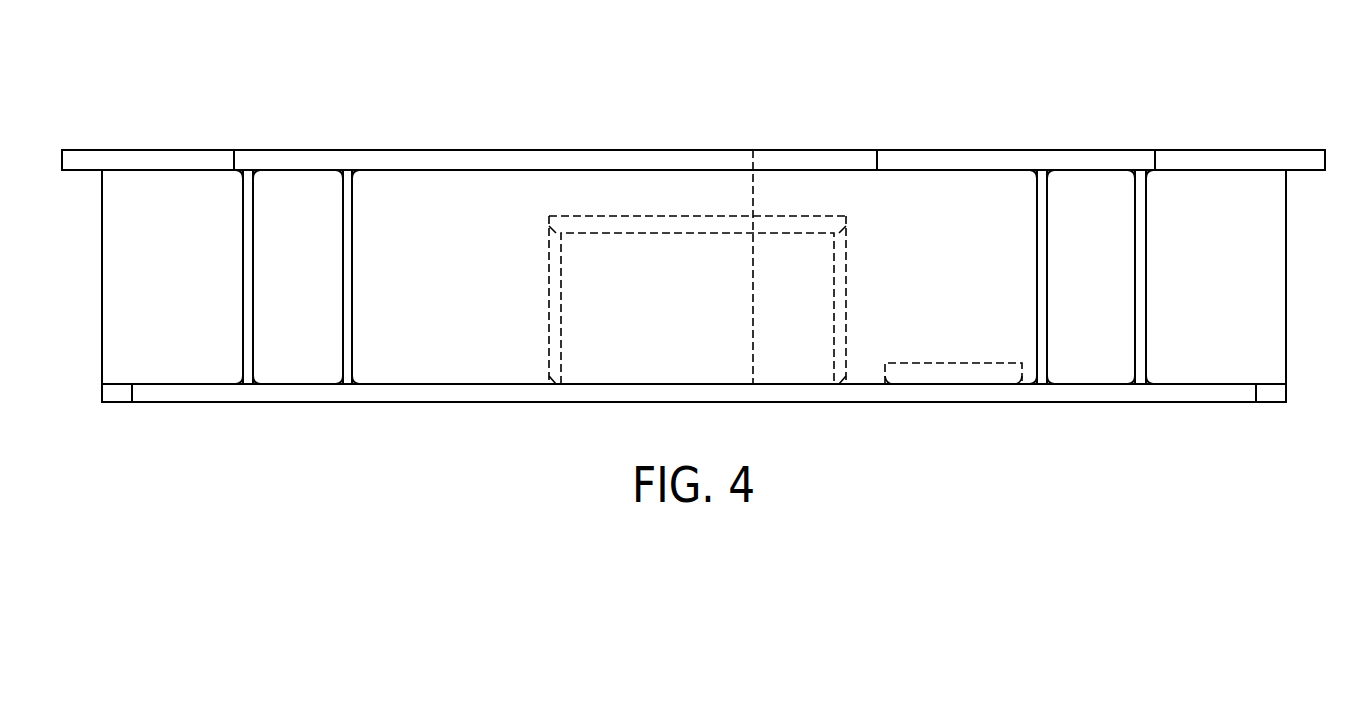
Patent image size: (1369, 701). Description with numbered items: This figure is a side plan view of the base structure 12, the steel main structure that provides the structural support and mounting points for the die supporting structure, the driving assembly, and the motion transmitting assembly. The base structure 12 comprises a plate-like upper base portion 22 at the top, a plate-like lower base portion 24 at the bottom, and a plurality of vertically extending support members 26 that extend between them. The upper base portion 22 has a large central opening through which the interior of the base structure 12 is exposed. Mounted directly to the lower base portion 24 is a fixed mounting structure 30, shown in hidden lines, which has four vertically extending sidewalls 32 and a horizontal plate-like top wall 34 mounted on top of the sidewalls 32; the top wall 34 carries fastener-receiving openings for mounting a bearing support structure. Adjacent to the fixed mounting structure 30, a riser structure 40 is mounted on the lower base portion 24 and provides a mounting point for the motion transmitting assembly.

The base structure 12 is at (1333, 124).
The upper base portion 22 is at (1222, 162).
The lower base portion 24 is at (1218, 392).
The support members 26 is at (348, 327).
The fixed mounting structure 30 is at (603, 363).
The sidewalls 32 is at (547, 290).
The top wall 34 is at (647, 220).
The riser structure 40 is at (938, 370).